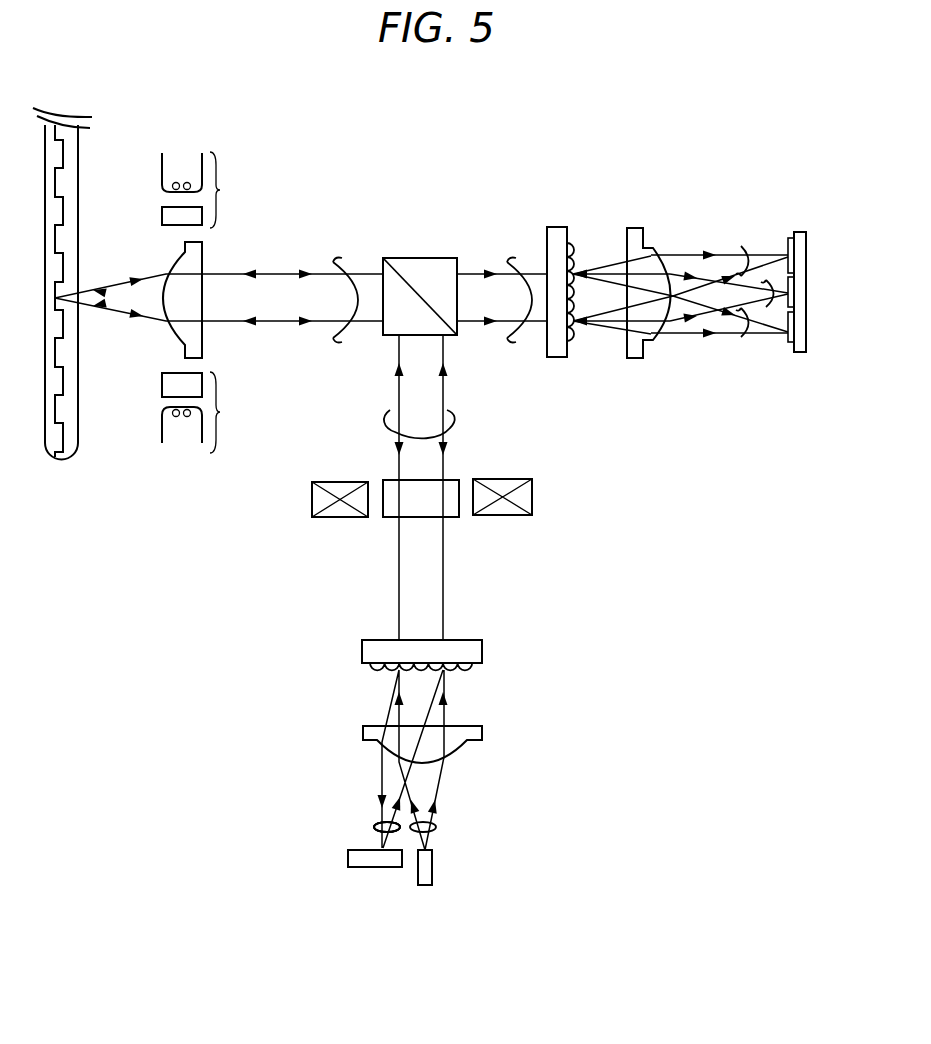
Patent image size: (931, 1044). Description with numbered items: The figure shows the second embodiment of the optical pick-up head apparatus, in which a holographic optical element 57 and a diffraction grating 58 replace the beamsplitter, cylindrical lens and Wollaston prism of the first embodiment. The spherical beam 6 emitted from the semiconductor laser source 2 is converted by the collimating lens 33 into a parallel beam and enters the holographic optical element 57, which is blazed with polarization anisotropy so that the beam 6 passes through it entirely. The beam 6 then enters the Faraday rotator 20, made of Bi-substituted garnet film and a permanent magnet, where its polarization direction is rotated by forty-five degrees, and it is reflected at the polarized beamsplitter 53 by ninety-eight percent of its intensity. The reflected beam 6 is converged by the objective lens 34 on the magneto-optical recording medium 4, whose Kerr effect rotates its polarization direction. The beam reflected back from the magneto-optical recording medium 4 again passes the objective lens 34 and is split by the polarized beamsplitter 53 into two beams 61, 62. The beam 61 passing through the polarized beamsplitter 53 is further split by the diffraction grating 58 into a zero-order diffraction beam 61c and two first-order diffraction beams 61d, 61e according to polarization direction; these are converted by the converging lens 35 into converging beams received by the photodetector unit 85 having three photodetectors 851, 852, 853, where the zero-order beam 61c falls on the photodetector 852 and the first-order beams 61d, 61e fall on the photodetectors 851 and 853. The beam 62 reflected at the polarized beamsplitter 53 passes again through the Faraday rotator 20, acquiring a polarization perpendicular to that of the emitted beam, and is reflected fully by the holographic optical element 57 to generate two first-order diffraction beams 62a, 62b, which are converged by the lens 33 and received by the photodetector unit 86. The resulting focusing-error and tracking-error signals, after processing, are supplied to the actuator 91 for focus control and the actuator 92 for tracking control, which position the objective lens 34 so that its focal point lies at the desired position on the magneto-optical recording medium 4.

The semiconductor laser source 2 is at (418, 883).
The magneto-optical recording medium 4 is at (80, 163).
The beam 6 is at (340, 341).
The Faraday rotator 20 is at (533, 497).
The collimating lens 33 is at (482, 730).
The objective lens 34 is at (203, 257).
The converging lens 35 is at (635, 358).
The polarized beamsplitter 53 is at (415, 257).
The holographic optical element 57 is at (482, 652).
The diffraction grating 58 is at (557, 227).
The beam 61 is at (512, 258).
The 0-order diffraction beam 61c is at (773, 308).
The 1-order diffraction beam 61d is at (747, 268).
The 1-order diffraction beam 61e is at (747, 337).
The beam 62 is at (452, 413).
The 1-order diffraction beam 62a is at (372, 823).
The 1-order diffraction beam 62b is at (328, 828).
The photodetector unit 85 is at (806, 232).
The photodetector 851 is at (792, 237).
The photodetector 852 is at (793, 291).
The photodetector 853 is at (793, 344).
The photodetector unit 86 is at (348, 866).
The actuator 91 is at (220, 190).
The actuator 92 is at (227, 412).